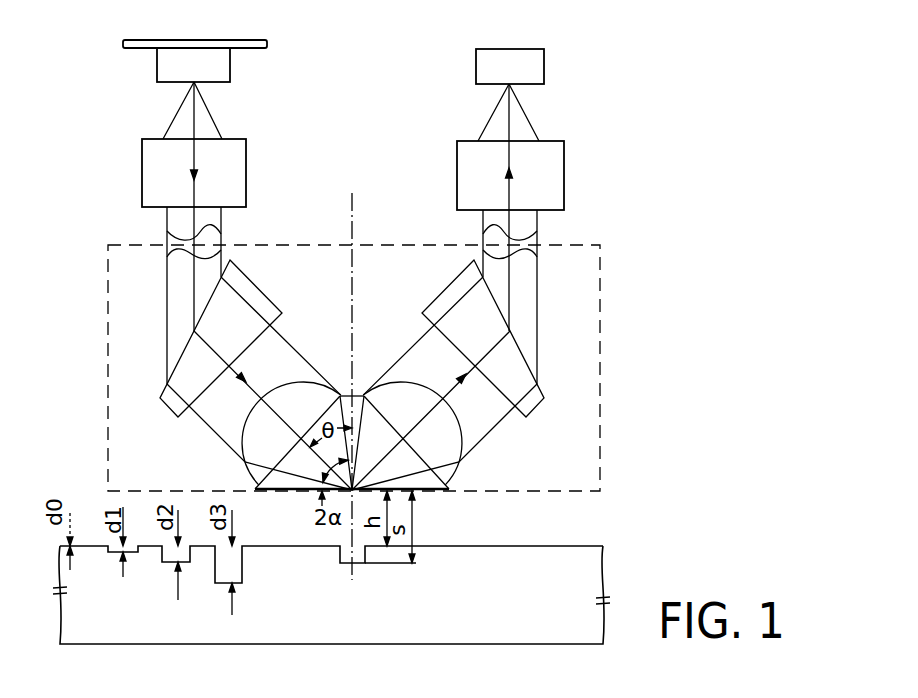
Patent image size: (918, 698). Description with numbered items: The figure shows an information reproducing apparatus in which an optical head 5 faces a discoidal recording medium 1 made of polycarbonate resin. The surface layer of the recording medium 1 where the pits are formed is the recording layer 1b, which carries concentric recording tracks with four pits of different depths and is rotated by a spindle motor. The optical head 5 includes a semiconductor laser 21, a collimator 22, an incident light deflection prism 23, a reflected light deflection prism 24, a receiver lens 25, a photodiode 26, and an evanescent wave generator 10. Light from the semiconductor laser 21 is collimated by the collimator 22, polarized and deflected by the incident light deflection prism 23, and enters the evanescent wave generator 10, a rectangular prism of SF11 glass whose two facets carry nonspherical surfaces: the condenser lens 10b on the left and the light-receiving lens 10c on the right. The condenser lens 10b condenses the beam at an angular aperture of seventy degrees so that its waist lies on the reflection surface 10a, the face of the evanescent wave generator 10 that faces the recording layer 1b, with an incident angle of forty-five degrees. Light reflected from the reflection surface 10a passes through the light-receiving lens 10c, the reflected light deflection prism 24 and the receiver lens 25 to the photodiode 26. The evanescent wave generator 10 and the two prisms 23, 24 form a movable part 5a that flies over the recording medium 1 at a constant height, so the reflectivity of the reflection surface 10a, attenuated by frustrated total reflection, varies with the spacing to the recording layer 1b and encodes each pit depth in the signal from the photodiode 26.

The recording medium 1 is at (588, 633).
The recording layer 1b is at (560, 547).
The optical head 5 is at (348, 41).
The movable part 5a is at (273, 245).
The evanescent wave generator 10 is at (348, 394).
The reflection surface 10a is at (440, 496).
The condenser lens 10b is at (241, 443).
The light-receiving lens 10c is at (463, 446).
The semiconductor laser 21 is at (198, 55).
The collimator 22 is at (244, 173).
The incident light deflection prism 23 is at (258, 287).
The reflected light deflection prism 24 is at (447, 287).
The receiver lens 25 is at (457, 168).
The photodiode 26 is at (513, 50).